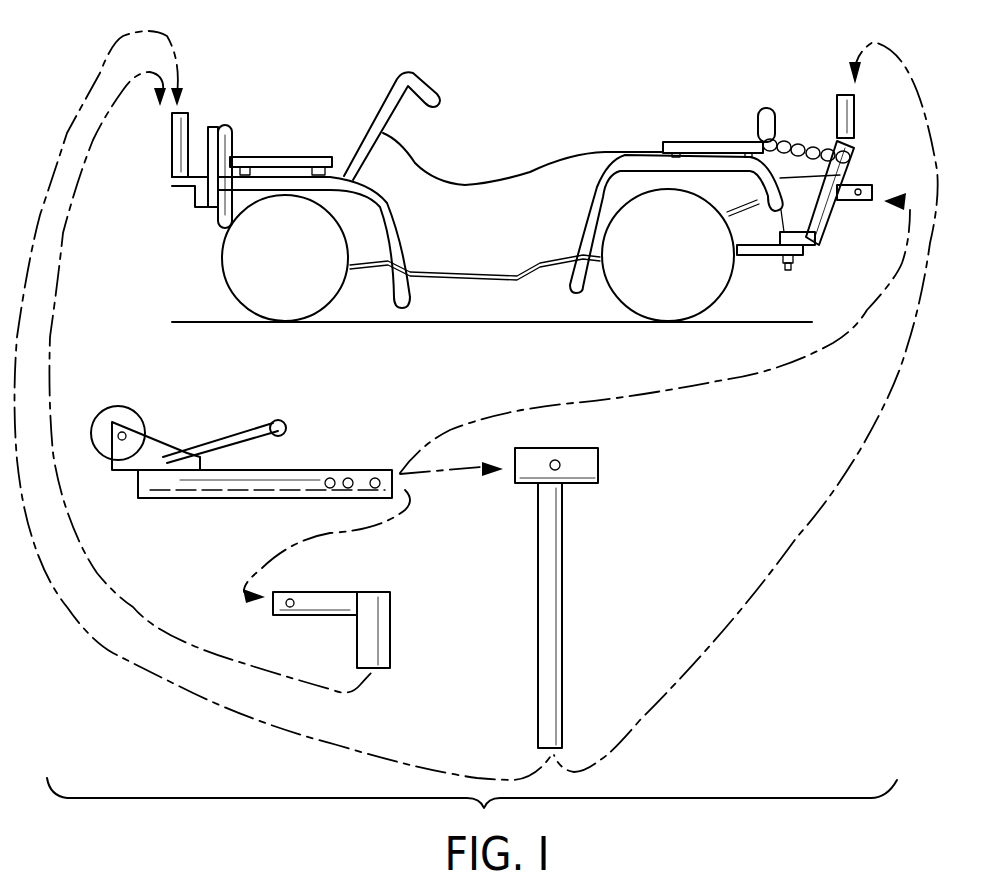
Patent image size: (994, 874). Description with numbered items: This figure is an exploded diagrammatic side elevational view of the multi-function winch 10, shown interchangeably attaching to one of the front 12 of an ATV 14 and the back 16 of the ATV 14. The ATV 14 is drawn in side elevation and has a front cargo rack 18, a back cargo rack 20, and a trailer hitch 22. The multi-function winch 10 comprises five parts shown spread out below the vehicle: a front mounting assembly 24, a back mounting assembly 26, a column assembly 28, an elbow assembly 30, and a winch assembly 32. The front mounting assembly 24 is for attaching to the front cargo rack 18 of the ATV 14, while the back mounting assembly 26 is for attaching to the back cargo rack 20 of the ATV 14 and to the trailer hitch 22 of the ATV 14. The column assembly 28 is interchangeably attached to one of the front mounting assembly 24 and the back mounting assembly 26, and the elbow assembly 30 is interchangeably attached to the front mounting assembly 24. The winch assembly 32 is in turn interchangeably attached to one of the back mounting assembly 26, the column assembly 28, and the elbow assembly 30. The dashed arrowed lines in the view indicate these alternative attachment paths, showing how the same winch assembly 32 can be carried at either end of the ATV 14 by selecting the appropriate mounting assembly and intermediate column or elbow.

The multi-function winch 10 is at (670, 557).
The front 12 is at (220, 214).
The ATV 14 is at (440, 80).
The back 16 is at (845, 178).
The front cargo rack 18 is at (270, 156).
The back cargo rack 20 is at (713, 140).
The trailer hitch 22 is at (763, 262).
The front mounting assembly 24 is at (180, 190).
The back mounting assembly 26 is at (836, 226).
The column assembly 28 is at (572, 610).
The elbow assembly 30 is at (406, 627).
The winch assembly 32 is at (232, 512).